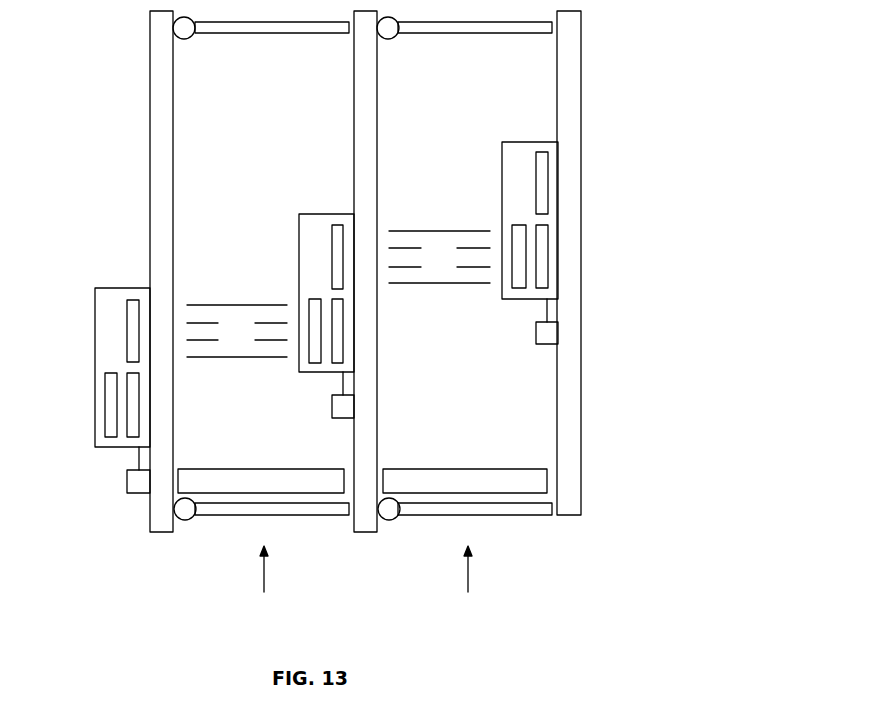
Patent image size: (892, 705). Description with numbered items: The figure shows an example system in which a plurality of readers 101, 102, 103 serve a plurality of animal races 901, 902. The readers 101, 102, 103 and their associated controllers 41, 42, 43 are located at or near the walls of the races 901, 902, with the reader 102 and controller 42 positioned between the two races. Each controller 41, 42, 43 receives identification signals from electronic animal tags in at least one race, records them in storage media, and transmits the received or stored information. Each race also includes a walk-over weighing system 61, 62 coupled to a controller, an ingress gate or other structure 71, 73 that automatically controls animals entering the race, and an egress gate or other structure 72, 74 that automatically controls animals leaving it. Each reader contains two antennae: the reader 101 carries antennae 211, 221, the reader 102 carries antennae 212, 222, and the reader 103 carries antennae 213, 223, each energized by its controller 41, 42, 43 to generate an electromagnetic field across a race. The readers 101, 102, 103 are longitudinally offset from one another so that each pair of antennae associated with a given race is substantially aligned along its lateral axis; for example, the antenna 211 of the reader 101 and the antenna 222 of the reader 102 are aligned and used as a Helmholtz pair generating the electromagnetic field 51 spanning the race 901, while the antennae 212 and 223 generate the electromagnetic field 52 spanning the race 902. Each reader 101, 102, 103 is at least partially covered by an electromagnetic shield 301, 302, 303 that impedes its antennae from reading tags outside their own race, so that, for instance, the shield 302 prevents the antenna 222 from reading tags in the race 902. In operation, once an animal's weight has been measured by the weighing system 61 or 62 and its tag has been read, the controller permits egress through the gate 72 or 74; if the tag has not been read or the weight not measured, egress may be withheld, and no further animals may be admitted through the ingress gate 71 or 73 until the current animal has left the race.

The egress gate or other structure 72 is at (212, 34).
The egress gate or other structure 74 is at (416, 34).
The walk-over weighing system 61 is at (213, 469).
The walk-over weighing system 62 is at (417, 469).
The ingress gate or other structure 71 is at (213, 516).
The ingress gate or other structure 73 is at (417, 516).
The reader 101 is at (95, 288).
The reader 102 is at (299, 214).
The reader 103 is at (502, 142).
The antenna 211 is at (133, 300).
The antenna 212 is at (337, 225).
The antenna 213 is at (540, 152).
The electromagnetic shield 301 is at (133, 373).
The electromagnetic shield 302 is at (337, 299).
The electromagnetic shield 303 is at (541, 225).
The antenna 221 is at (111, 437).
The antenna 222 is at (315, 363).
The antenna 223 is at (519, 288).
The controller 41 is at (127, 481).
The controller 42 is at (332, 406).
The controller 43 is at (536, 332).
The electromagnetic field 51 is at (237, 331).
The electromagnetic field 52 is at (439, 257).
The race 901 is at (264, 583).
The race 902 is at (468, 583).